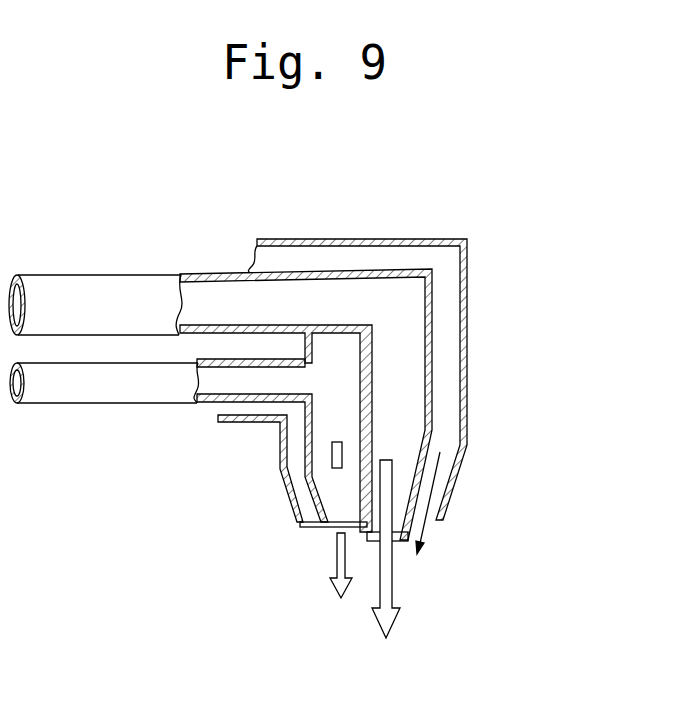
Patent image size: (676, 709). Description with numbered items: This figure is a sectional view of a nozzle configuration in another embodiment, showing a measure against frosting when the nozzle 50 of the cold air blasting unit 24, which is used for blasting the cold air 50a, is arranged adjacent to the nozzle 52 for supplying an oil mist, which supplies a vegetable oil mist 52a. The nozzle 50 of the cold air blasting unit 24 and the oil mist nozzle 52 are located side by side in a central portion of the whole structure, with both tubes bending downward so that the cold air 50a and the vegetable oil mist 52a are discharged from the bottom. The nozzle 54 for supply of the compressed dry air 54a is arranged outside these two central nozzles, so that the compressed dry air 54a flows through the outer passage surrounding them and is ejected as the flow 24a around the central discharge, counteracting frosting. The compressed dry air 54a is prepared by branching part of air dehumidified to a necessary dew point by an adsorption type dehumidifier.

The cold air blasting unit 24 is at (297, 398).
The gas ejection flow 24a is at (448, 548).
The nozzle 50 is at (68, 274).
The cold air 50a is at (393, 618).
The nozzle for supplying an oil mist 52 is at (97, 403).
The vegetable oil mist 52a is at (333, 570).
The nozzle for supply of compressed dry air 54 is at (428, 239).
The compressed dry air 54a is at (412, 520).